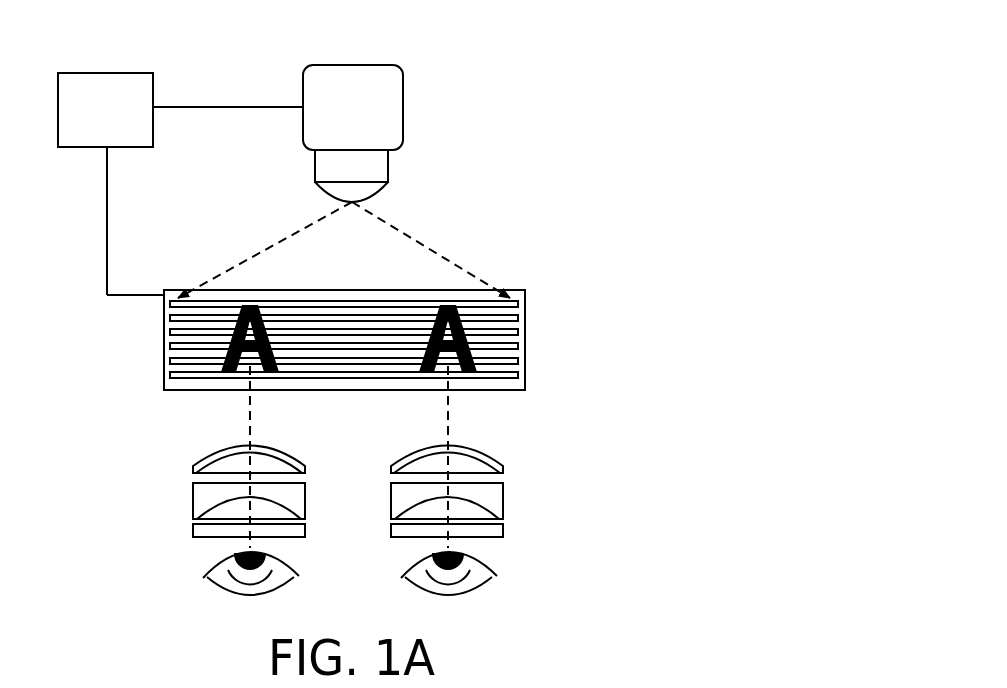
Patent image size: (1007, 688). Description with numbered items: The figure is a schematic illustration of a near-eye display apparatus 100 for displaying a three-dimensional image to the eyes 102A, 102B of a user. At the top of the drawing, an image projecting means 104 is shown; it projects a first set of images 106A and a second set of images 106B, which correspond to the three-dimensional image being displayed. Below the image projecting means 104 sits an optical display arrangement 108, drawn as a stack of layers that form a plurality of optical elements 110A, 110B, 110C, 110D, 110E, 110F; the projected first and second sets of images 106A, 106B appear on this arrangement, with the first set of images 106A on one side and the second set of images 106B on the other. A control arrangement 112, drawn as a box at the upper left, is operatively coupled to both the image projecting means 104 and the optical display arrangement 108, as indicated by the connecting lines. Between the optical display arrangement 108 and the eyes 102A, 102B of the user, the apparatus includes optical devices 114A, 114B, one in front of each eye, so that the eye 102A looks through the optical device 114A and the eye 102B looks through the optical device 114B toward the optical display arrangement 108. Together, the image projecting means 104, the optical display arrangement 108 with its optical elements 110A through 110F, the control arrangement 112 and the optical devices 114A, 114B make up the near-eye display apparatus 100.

The near-eye display apparatus 100 is at (645, 83).
The eye of a user 102A is at (207, 578).
The eye of a user 102B is at (490, 580).
The image projecting means 104 is at (403, 103).
The first set of images 106A is at (238, 333).
The second set of images 106B is at (465, 337).
The optical display arrangement 108 is at (525, 333).
The optical element 110A is at (164, 304).
The optical element 110B is at (164, 318).
The optical element 110C is at (164, 332).
The optical element 110D is at (164, 346).
The optical element 110E is at (164, 361).
The optical element 110F is at (164, 375).
The control arrangement 112 is at (125, 118).
The optical device 114A is at (168, 483).
The optical device 114B is at (527, 482).